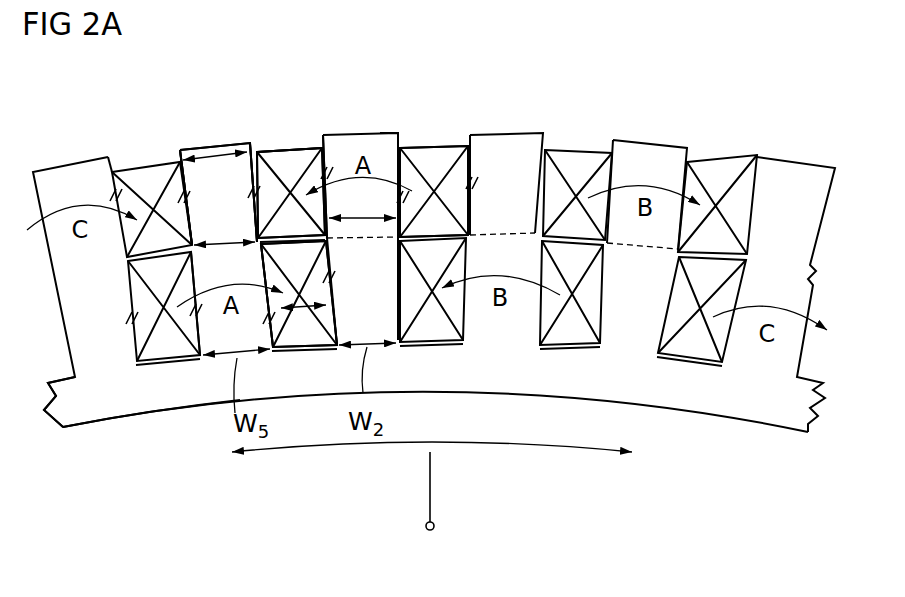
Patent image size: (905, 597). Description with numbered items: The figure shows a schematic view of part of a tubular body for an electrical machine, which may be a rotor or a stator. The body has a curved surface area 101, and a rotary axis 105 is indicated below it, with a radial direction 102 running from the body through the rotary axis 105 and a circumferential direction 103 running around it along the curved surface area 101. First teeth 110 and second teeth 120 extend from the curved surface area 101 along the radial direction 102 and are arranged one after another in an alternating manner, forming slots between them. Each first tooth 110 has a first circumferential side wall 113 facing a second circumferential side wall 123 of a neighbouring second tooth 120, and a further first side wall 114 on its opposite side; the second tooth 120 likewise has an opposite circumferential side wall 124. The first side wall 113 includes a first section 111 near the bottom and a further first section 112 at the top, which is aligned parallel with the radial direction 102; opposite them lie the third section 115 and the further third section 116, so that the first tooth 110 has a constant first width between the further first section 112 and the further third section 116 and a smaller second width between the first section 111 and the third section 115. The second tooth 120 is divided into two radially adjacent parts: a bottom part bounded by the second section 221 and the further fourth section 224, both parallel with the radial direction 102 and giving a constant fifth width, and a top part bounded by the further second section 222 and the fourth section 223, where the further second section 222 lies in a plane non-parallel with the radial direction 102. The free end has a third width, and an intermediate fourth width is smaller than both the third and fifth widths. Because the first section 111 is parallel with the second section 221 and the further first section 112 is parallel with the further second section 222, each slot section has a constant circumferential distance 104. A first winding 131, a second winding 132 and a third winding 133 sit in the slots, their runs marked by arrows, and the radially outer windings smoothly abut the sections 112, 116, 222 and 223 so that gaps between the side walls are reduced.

The curved surface area 101 is at (62, 378).
The radial direction 102 is at (431, 490).
The circumferential direction 103 is at (541, 449).
The circumferential distance 104 is at (305, 308).
The rotary axis 105 is at (436, 527).
The first tooth 110 is at (372, 150).
The first section 111 is at (335, 320).
The further first section 112 is at (325, 155).
The first circumferential side wall 113 is at (300, 140).
The further first side wall 114 is at (405, 139).
The third section 115 is at (397, 270).
The further third section 116 is at (388, 170).
The second tooth 120 is at (217, 148).
The second circumferential side wall 123 is at (263, 143).
The circumferential side wall 124 is at (462, 138).
The first winding 131 is at (283, 165).
The second winding 132 is at (575, 160).
The third winding 133 is at (150, 172).
The second section 221 is at (265, 277).
The further second section 222 is at (249, 143).
The fourth section 223 is at (182, 161).
The further fourth section 224 is at (199, 325).